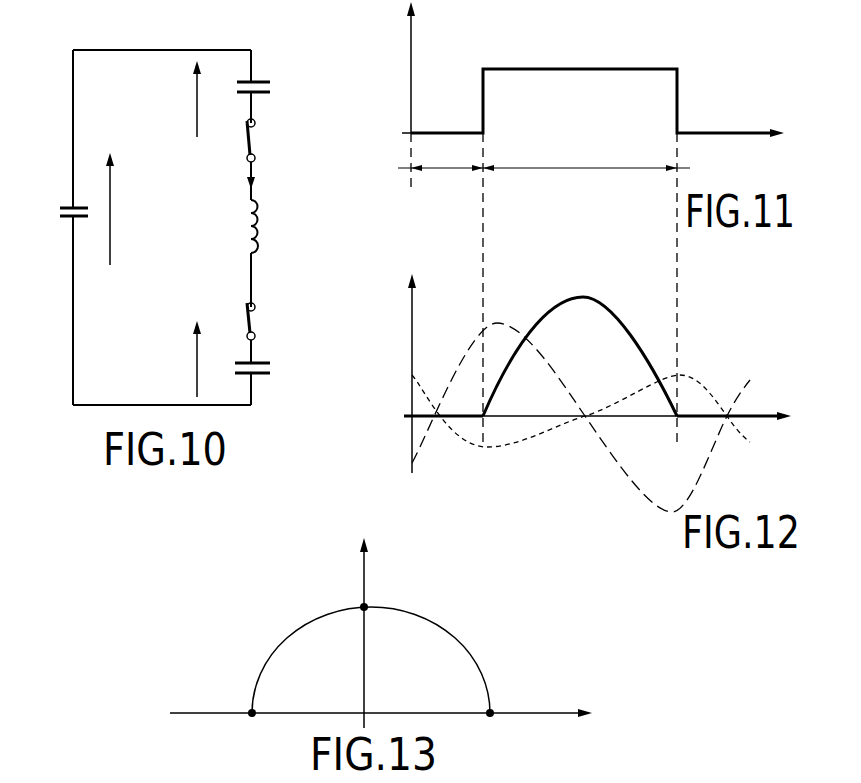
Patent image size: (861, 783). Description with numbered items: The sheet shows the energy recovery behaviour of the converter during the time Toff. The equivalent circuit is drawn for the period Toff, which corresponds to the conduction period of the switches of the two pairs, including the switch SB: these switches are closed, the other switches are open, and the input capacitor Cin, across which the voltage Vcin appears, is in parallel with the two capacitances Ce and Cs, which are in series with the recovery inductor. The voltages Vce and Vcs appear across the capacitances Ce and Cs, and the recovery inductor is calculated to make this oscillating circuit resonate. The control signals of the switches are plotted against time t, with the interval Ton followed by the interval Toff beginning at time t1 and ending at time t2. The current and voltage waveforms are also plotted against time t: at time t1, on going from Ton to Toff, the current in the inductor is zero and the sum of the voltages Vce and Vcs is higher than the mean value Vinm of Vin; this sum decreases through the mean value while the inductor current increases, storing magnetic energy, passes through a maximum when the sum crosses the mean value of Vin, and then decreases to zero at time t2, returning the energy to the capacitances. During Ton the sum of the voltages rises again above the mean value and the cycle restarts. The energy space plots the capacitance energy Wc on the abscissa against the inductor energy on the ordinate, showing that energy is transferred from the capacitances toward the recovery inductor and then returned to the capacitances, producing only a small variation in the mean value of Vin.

In FIG. 10, the input capacitor Cin is at (72, 206).
In FIG. 10, the voltage across the input capacitor Vcin is at (127, 209).
In FIG. 12, the voltage across the input capacitor Vcin is at (506, 452).
In FIG. 10, the capacitance Ce is at (260, 81).
In FIG. 10, the voltage across capacitance Ce Vce is at (182, 99).
In FIG. 10, the switch SB is at (247, 318).
In FIG. 10, the voltage across capacitance Cs Vcs is at (179, 359).
In FIG. 10, the capacitance Cs is at (261, 362).
In FIG. 11, the time t is at (593, 103).
In FIG. 12, the time t is at (637, 405).
In FIG. 11, the time Ton is at (440, 159).
In FIG. 11, the time Toff is at (586, 159).
In FIG. 11, the time t1 is at (485, 137).
In FIG. 11, the time t2 is at (679, 137).
In FIG. 12, the input voltage Vin is at (394, 373).
In FIG. 12, the mean value of Vin Vinm is at (418, 418).
In FIG. 13, the capacitance energy Wc is at (388, 704).